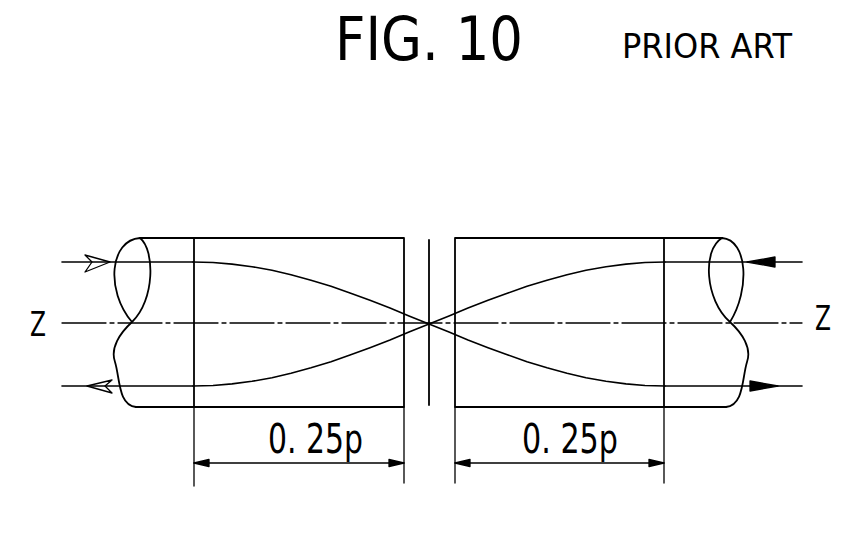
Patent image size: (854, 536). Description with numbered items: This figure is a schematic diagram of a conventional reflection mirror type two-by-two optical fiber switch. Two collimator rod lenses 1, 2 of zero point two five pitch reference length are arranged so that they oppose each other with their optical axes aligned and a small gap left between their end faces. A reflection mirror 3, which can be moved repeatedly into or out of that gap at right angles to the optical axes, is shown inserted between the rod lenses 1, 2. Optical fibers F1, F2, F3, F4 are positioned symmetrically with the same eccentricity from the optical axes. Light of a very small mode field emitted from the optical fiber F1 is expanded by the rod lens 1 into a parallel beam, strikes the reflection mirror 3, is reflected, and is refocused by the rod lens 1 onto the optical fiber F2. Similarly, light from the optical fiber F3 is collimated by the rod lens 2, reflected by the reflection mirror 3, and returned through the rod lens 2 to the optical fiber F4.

The rod lens 1 is at (283, 238).
The rod lens 2 is at (575, 238).
The reflection mirror 3 is at (430, 238).
The optical fiber F1 is at (168, 262).
The optical fiber F2 is at (170, 387).
The optical fiber F3 is at (690, 258).
The optical fiber F4 is at (692, 386).